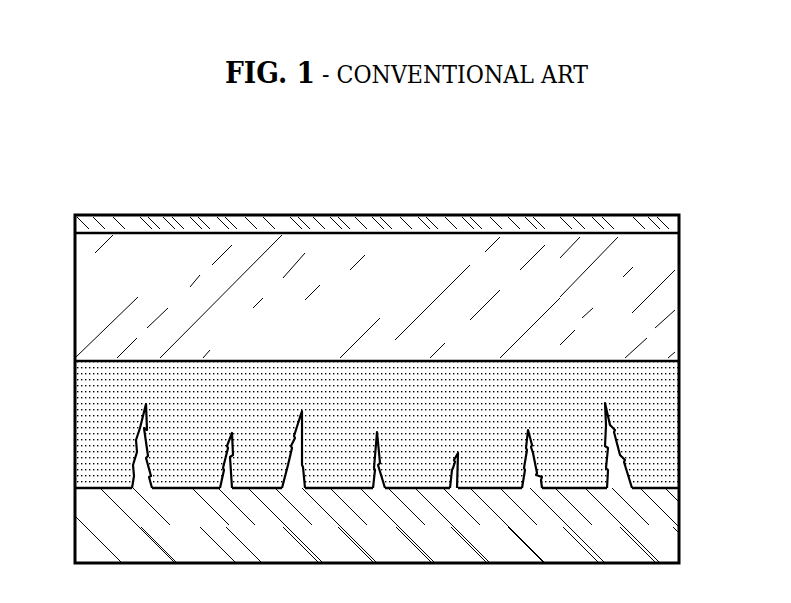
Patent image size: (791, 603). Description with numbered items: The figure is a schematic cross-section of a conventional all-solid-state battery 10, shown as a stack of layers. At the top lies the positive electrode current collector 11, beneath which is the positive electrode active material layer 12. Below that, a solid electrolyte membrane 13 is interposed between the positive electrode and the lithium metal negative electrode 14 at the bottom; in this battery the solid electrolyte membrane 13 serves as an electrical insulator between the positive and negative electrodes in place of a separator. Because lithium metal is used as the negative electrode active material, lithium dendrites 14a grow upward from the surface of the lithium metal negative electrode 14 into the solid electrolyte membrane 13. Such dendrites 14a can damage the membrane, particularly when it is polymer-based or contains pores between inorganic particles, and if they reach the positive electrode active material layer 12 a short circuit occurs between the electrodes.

The conventional all-solid-state battery 10 is at (113, 171).
The positive electrode current collector 11 is at (676, 224).
The positive electrode active material layer 12 is at (676, 294).
The solid electrolyte membrane 13 is at (673, 398).
The lithium metal negative electrode 14 is at (673, 530).
The lithium dendrite 14a is at (617, 447).